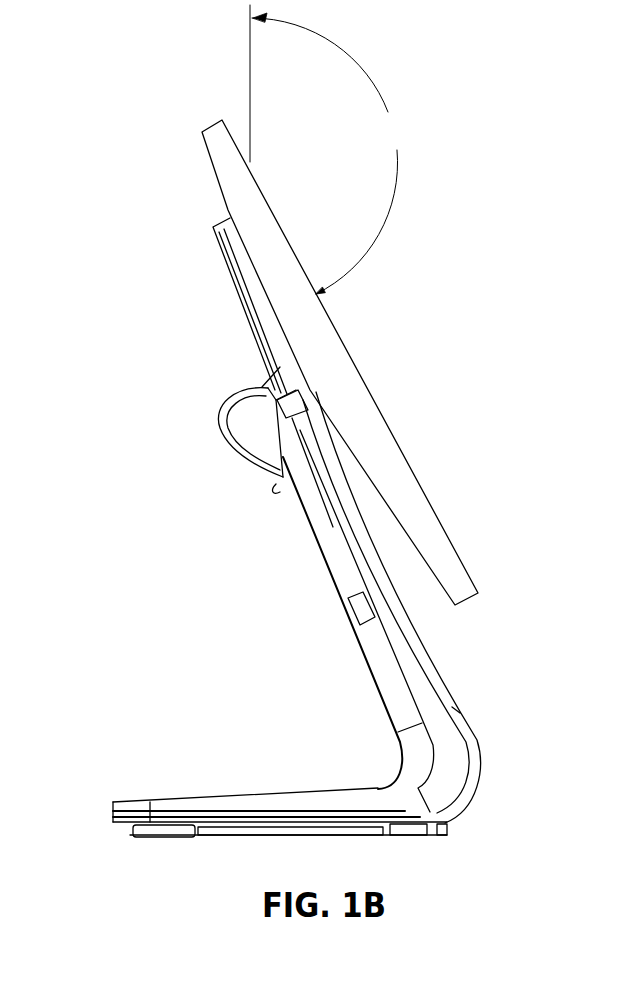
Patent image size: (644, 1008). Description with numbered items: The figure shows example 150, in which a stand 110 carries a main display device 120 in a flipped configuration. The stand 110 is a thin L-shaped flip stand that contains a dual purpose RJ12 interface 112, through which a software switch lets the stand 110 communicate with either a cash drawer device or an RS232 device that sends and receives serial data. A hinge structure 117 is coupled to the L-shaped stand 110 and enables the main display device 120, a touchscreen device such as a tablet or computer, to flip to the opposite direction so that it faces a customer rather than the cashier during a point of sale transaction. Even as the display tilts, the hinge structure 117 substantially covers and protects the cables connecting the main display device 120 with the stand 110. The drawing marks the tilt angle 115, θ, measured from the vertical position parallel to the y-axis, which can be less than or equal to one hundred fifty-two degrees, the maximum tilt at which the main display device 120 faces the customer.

The stand 110 is at (445, 770).
The dual purpose RJ12 interface 112 is at (340, 603).
The tilt angle 115 is at (393, 176).
The hinge structure 117 is at (236, 425).
The main display device 120 is at (355, 425).
The example 150 is at (446, 77).